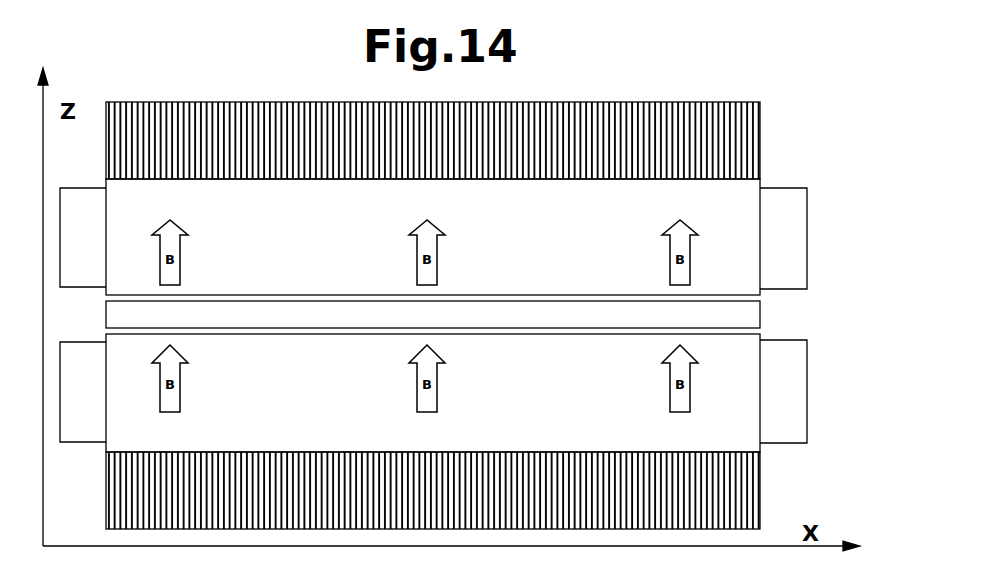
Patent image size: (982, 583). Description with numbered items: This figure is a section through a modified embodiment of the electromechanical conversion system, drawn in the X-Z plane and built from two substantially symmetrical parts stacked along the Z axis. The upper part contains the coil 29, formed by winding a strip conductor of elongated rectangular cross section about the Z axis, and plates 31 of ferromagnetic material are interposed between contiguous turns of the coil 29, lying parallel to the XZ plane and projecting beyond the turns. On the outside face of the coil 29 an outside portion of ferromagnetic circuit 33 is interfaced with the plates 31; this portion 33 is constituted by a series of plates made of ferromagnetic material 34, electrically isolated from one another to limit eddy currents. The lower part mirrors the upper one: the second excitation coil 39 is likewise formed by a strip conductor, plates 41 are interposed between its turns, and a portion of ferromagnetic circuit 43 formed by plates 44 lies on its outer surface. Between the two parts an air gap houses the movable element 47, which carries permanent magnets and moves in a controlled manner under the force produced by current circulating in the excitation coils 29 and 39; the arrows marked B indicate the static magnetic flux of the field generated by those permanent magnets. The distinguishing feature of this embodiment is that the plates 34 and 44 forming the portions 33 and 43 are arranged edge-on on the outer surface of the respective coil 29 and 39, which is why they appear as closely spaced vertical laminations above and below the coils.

The coil 29 is at (778, 203).
The plates 31 is at (358, 261).
The outside portion of ferromagnetic circuit 33 is at (543, 130).
The plates made of ferromagnetic material 34 is at (197, 104).
The second excitation coil 39 is at (782, 350).
The plates 41 is at (360, 400).
The portion of ferromagnetic circuit 43 is at (712, 500).
The plates 44 is at (140, 508).
The movable element 47 is at (490, 310).